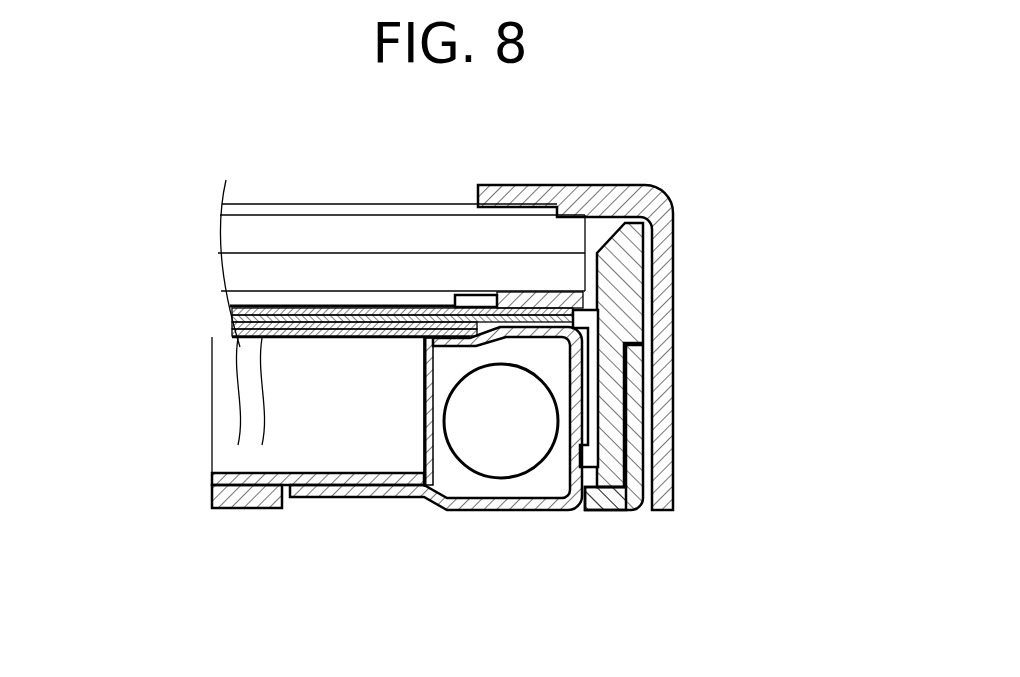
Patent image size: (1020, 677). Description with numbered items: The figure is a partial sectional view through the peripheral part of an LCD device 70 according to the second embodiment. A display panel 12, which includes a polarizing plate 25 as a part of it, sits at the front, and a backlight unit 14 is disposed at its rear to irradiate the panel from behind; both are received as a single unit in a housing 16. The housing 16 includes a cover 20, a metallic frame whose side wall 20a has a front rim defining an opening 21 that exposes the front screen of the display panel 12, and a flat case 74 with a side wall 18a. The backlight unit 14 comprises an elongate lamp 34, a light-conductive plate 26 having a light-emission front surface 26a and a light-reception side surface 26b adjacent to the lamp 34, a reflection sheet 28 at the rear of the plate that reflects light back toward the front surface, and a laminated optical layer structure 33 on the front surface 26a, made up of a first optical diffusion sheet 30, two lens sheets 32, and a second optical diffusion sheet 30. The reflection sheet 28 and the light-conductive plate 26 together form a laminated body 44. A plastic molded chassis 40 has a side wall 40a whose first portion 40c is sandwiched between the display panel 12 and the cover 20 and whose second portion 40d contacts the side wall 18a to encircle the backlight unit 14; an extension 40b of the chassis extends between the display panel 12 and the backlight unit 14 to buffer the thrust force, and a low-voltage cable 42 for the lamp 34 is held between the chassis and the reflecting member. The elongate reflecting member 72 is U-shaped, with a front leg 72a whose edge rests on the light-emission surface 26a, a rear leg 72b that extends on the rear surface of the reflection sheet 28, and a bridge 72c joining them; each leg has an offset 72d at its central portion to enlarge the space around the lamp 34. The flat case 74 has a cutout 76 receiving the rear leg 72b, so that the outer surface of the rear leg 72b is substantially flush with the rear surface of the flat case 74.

The display panel 12 is at (356, 230).
The backlight unit 14 is at (291, 430).
The housing 16 is at (711, 514).
The side wall of the flat case 18a is at (652, 480).
The cover 20 is at (714, 496).
The side wall of the cover 20a is at (663, 457).
The opening 21 is at (340, 192).
The polarizing plate 25 is at (400, 210).
The light-conductive plate 26 is at (303, 452).
The light-emission front surface 26a is at (329, 412).
The light-reception side surface 26b is at (437, 478).
The reflection sheet 28 is at (212, 482).
The optical diffusion sheet 30 is at (230, 311).
The lens sheet 32 is at (232, 318).
The laminated optical layer structure 33 is at (320, 347).
The elongate lamp 34 is at (497, 467).
The molded chassis 40 is at (691, 323).
The side wall of the molded chassis 40a is at (709, 339).
The extension 40b is at (603, 185).
The first portion 40c is at (615, 273).
The second portion 40d is at (645, 388).
The low-voltage cable 42 is at (593, 418).
The laminated body 44 is at (275, 452).
The LCD device 70 is at (522, 150).
The reflecting member 72 is at (433, 418).
The front leg 72a is at (433, 362).
The rear leg 72b is at (376, 453).
The bridge 72c is at (477, 367).
The offset 72d is at (433, 447).
The flat case 74 is at (622, 513).
The cutout 76 is at (430, 513).